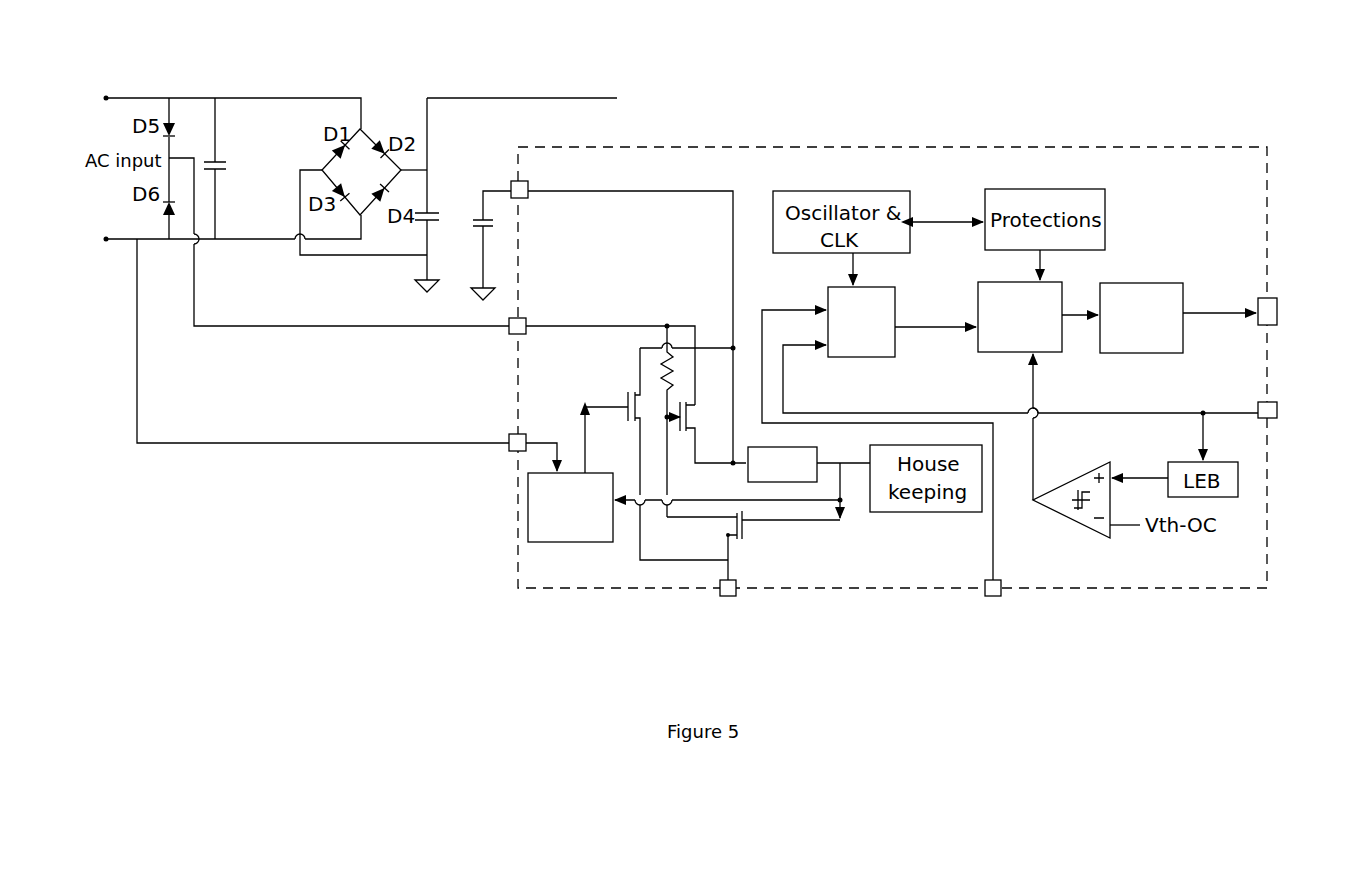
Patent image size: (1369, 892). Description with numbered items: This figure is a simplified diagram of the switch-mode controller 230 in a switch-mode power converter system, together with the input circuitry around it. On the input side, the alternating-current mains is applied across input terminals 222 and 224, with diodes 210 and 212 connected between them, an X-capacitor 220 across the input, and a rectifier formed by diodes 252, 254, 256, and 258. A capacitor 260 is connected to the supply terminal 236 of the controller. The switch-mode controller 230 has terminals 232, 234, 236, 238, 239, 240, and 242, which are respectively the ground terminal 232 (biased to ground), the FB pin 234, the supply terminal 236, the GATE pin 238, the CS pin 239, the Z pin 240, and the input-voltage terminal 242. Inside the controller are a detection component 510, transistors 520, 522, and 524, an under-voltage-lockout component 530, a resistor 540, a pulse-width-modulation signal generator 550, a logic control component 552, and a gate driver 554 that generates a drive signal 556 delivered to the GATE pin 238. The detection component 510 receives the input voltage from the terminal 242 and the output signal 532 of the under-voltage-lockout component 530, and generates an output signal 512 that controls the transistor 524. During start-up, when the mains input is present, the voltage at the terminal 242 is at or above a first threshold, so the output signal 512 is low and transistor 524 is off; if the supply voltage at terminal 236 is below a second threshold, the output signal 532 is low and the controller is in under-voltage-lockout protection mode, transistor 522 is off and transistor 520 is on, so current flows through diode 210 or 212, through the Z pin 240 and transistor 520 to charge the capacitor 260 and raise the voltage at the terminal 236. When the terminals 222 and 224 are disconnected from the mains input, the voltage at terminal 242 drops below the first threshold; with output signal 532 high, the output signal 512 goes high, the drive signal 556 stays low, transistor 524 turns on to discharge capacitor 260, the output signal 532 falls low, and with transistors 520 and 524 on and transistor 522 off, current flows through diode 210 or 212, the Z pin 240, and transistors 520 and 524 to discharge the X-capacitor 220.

The input terminal 222 is at (106, 98).
The diode 210 is at (173, 130).
The diode 212 is at (164, 213).
The input terminal 224 is at (106, 239).
The X-capacitor 220 is at (224, 171).
The diode 252 is at (326, 145).
The diode 254 is at (380, 146).
The diode 256 is at (344, 200).
The diode 258 is at (381, 205).
The capacitor 260 is at (471, 235).
The switch-mode controller 230 is at (1210, 588).
The VCC pin 236 is at (513, 178).
The Z pin 240 is at (509, 324).
The VAC pin 242 is at (509, 452).
The GND pin 232 is at (736, 592).
The FB pin 234 is at (1001, 594).
The GATE pin 238 is at (1277, 322).
The CS pin 239 is at (1277, 402).
The resistor 540 is at (668, 350).
The transistor 524 is at (624, 414).
The output signal 512 is at (584, 428).
The transistor 520 is at (682, 428).
The under-voltage-lockout component 530 is at (780, 437).
The output signal 532 is at (800, 483).
The transistor 522 is at (745, 531).
The detection component 510 is at (565, 542).
The PWM signal generator 550 is at (856, 357).
The logic control component 552 is at (990, 352).
The gate driver 554 is at (1130, 353).
The drive signal 556 is at (1205, 313).